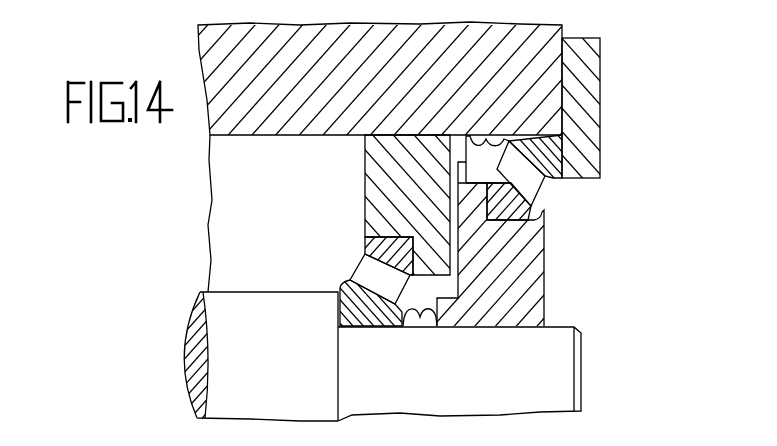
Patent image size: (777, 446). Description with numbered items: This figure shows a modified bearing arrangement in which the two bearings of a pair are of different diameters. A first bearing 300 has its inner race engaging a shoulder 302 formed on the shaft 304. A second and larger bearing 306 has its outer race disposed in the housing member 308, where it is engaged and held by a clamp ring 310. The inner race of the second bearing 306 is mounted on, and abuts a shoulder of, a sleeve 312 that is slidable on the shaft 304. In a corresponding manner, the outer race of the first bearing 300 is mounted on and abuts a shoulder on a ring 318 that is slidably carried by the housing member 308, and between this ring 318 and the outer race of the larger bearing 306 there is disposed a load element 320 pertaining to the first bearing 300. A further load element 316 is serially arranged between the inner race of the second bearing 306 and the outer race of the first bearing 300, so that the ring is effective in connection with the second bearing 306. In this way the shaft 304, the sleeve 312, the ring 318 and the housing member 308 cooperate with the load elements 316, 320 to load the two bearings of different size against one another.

The first bearing 300 is at (351, 270).
The shoulder 302 is at (338, 371).
The shaft 304 is at (562, 378).
The second bearing 306 is at (550, 196).
The housing member 308 is at (553, 32).
The clamp ring 310 is at (598, 130).
The sleeve 312 is at (530, 270).
The load element 316 is at (427, 322).
The ring 318 is at (368, 215).
The load element 320 is at (478, 160).